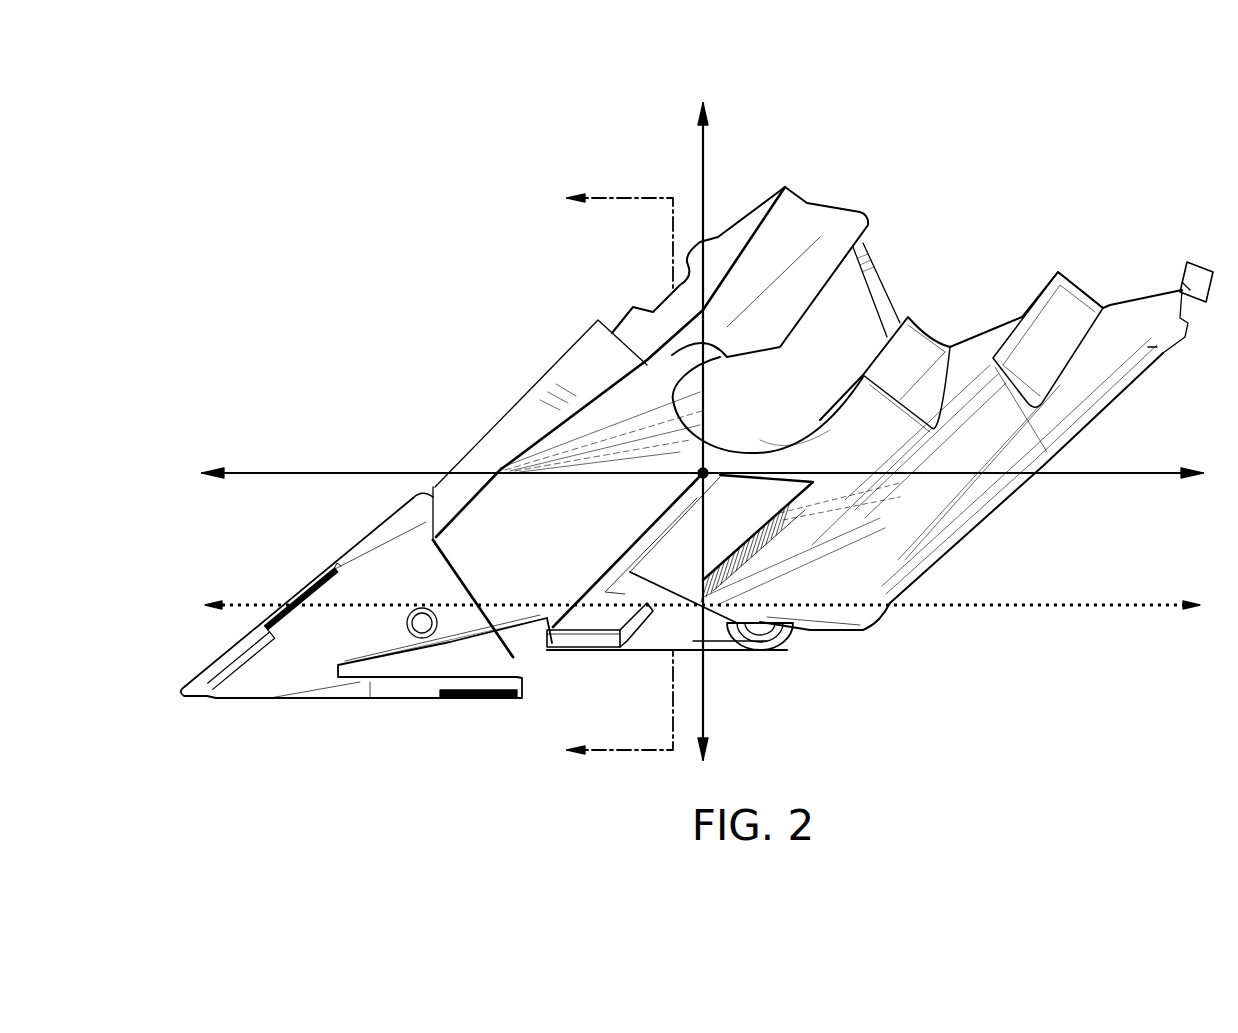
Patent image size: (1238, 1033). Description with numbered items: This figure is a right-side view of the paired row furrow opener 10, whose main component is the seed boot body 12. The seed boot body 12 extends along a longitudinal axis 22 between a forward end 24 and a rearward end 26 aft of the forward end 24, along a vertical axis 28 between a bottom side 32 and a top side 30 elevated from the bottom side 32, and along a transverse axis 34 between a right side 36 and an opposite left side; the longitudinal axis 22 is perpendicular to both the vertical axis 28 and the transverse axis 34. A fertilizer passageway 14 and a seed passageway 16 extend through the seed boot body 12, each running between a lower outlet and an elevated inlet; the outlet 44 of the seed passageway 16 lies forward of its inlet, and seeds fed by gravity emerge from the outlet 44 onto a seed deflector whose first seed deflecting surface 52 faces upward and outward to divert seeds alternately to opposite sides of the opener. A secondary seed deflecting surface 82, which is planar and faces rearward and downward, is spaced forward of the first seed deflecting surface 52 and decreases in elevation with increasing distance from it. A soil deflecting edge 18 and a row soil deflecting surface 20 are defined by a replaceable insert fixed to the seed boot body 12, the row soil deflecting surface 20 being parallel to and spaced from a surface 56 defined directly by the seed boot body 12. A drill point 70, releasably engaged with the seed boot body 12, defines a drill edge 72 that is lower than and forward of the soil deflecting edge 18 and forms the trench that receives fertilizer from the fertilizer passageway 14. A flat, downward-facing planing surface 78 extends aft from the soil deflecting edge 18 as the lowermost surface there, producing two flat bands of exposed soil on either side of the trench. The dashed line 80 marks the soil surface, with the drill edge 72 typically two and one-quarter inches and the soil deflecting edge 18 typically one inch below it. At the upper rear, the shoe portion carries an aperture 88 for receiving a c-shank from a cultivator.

The paired row furrow opener 10 is at (382, 202).
The seed boot body 12 is at (540, 342).
The fertilizer passageway 14 is at (957, 302).
The seed passageway 16 is at (1103, 280).
The soil deflecting edge 18 is at (550, 653).
The row soil deflecting surface 20 is at (573, 640).
The longitudinal axis 22 is at (352, 472).
The forward end 24 is at (313, 347).
The rearward end 26 is at (1052, 525).
The vertical axis 28 is at (702, 150).
The top side 30 is at (820, 175).
The bottom side 32 is at (500, 777).
The transverse axis 34 is at (698, 477).
The right side 36 is at (333, 285).
The outlet of the seed passageway 44 is at (780, 643).
The first seed deflecting surface 52 is at (658, 640).
The surface defined directly by the seed boot body 56 is at (627, 595).
The drill point 70 is at (255, 688).
The drill edge 72 is at (190, 690).
The planing surface 78 is at (737, 650).
The soil surface line 80 is at (1072, 605).
The secondary seed deflecting surface 82 is at (623, 647).
The aperture 88 is at (823, 353).